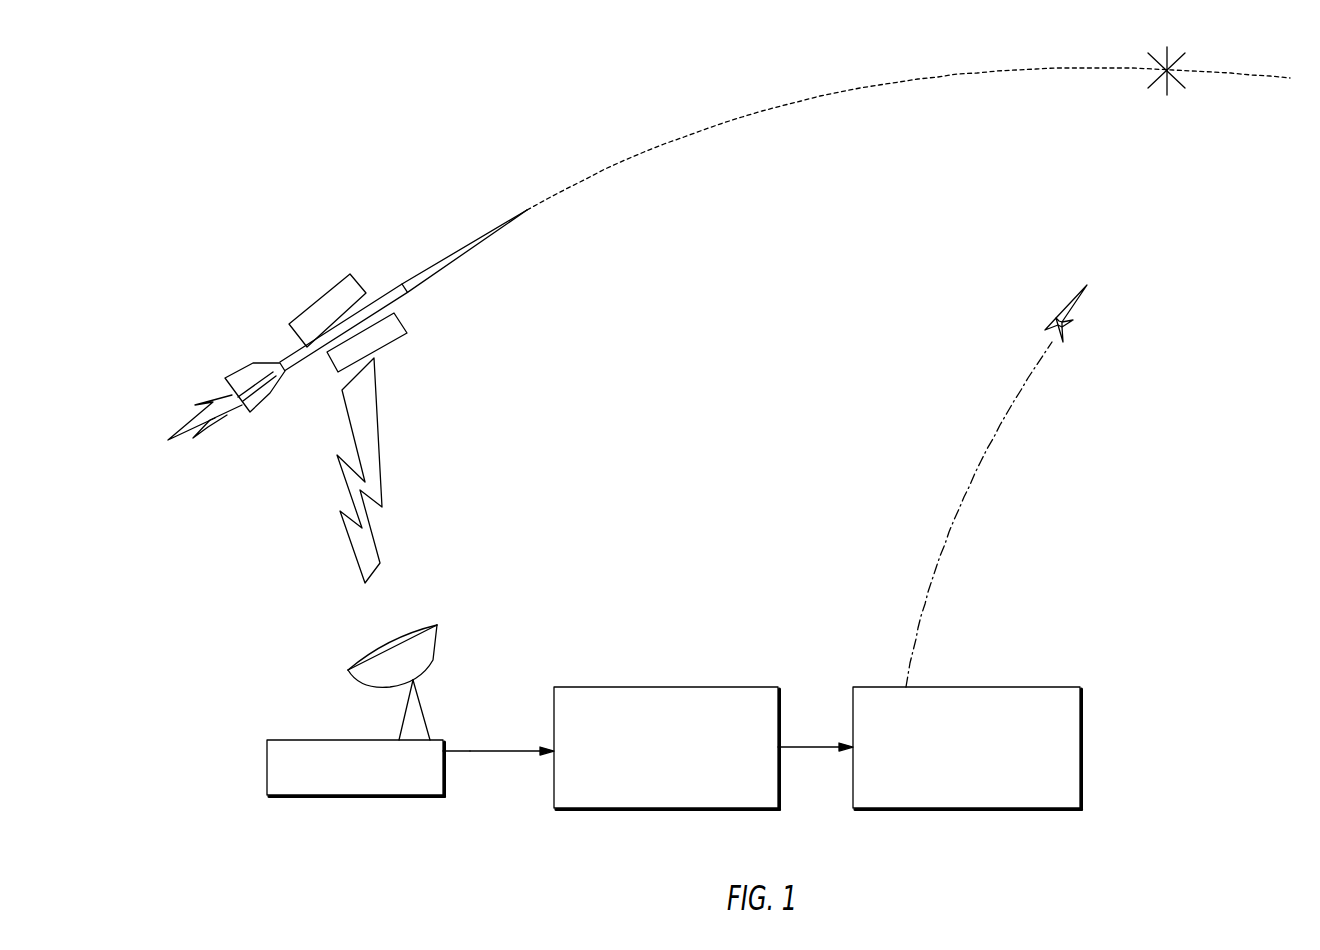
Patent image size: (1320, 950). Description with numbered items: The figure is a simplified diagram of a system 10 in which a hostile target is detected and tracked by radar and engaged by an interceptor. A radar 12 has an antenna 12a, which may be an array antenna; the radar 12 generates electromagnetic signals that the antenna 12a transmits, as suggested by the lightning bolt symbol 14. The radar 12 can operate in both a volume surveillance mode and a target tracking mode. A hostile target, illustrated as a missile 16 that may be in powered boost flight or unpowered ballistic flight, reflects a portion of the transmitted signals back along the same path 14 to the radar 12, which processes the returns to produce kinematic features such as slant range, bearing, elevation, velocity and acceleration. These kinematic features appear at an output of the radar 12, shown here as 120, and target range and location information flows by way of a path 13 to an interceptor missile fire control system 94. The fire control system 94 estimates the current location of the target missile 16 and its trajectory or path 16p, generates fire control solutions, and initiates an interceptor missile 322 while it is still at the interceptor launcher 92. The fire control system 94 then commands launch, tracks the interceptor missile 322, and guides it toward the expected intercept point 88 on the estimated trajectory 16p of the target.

The system 10 is at (213, 884).
The radar 12 is at (308, 740).
The antenna 12a is at (418, 623).
The path 13 is at (517, 748).
The lightning bolt symbol 14 is at (382, 493).
The missile 16 is at (422, 266).
The trajectory 16p is at (847, 95).
The intercept point 88 is at (1167, 92).
The interceptor launcher 92 is at (993, 685).
The fire control system 94 is at (695, 685).
The radar output 120 is at (445, 750).
The interceptor missile 322 is at (1080, 308).